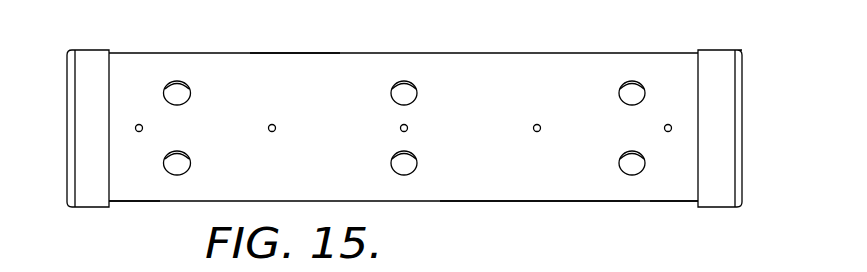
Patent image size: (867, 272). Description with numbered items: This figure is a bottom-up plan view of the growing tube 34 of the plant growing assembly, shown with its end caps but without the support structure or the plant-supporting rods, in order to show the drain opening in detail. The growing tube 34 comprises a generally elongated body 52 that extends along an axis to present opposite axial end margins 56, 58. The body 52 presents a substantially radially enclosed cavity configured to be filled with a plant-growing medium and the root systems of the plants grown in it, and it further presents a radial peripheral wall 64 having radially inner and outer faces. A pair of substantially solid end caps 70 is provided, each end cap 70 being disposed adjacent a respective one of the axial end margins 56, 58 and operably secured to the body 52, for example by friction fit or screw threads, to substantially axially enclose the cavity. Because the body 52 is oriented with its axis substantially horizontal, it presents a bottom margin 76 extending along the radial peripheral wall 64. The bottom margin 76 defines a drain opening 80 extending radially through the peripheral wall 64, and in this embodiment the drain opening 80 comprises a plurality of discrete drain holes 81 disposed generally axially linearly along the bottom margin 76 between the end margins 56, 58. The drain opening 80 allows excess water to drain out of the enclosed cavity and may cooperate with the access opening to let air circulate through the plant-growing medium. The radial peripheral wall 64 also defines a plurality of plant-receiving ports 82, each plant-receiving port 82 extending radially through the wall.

The growing tube 34 is at (489, 44).
The elongated body 52 is at (564, 203).
The axial end margin 56 is at (127, 209).
The axial end margin 58 is at (684, 209).
The radial peripheral wall 64 is at (293, 68).
The end cap 70 is at (83, 90).
The bottom margin 76 is at (475, 136).
The drain opening 80 is at (127, 133).
The discrete drain holes 81 is at (276, 126).
The plant-receiving port 82 is at (173, 85).